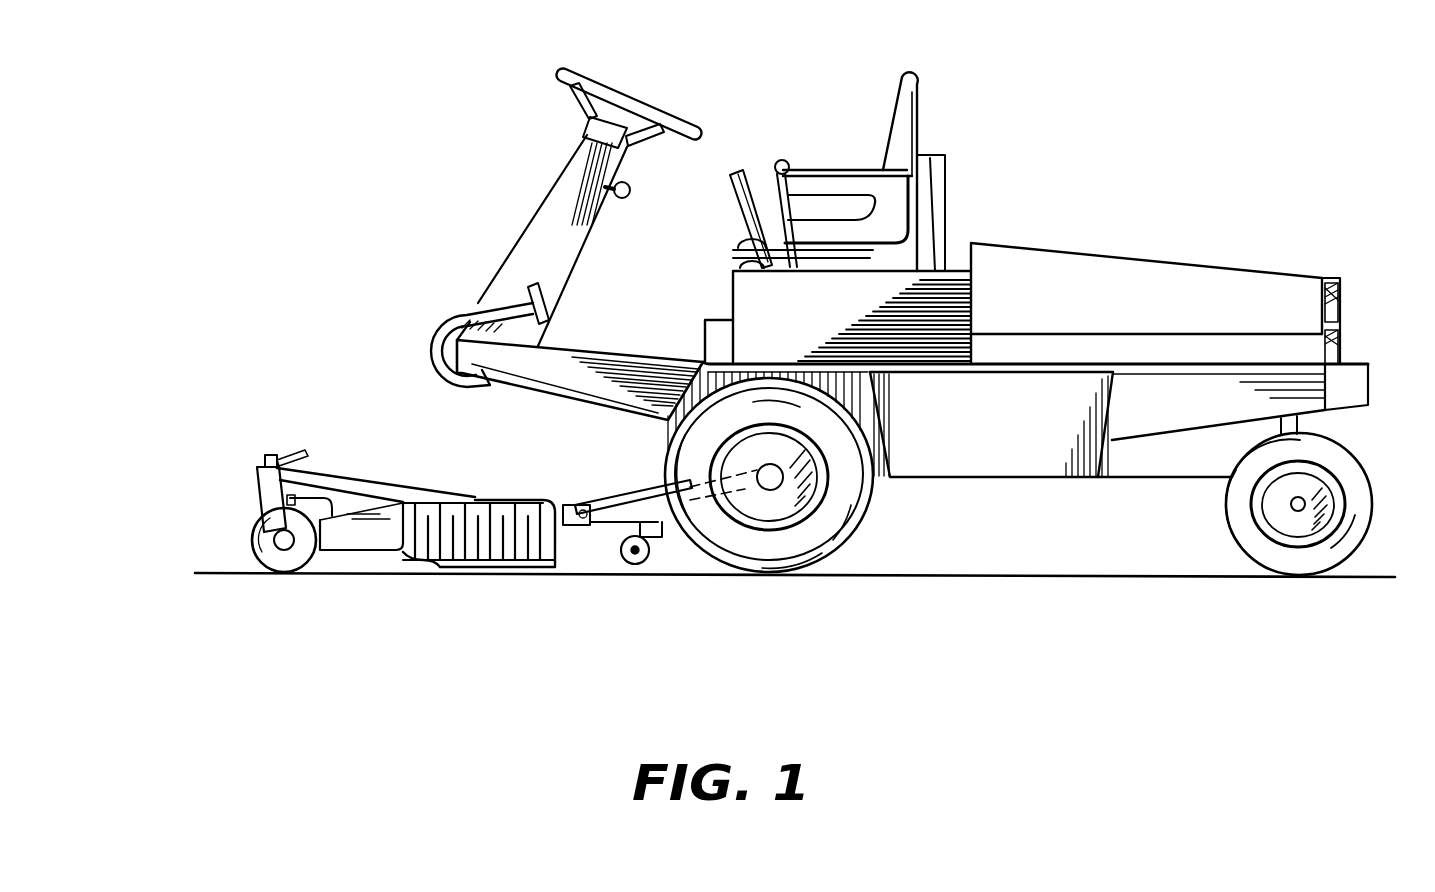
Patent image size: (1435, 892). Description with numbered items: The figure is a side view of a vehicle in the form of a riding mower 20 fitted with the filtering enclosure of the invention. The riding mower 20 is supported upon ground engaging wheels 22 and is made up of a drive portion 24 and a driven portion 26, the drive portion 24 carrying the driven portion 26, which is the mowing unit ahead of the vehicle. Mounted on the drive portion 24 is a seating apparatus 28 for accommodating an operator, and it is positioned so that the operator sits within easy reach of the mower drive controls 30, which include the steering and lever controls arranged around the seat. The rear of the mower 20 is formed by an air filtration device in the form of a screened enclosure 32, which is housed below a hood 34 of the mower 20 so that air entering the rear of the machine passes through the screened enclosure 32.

The riding mower 20 is at (302, 93).
The ground engaging wheels 22 is at (852, 538).
The drive portion 24 is at (1232, 172).
The driven portion 26 is at (252, 423).
The seating apparatus 28 is at (917, 76).
The mower drive controls 30 is at (698, 140).
The screened enclosure 32 is at (1341, 278).
The hood 34 is at (1238, 268).